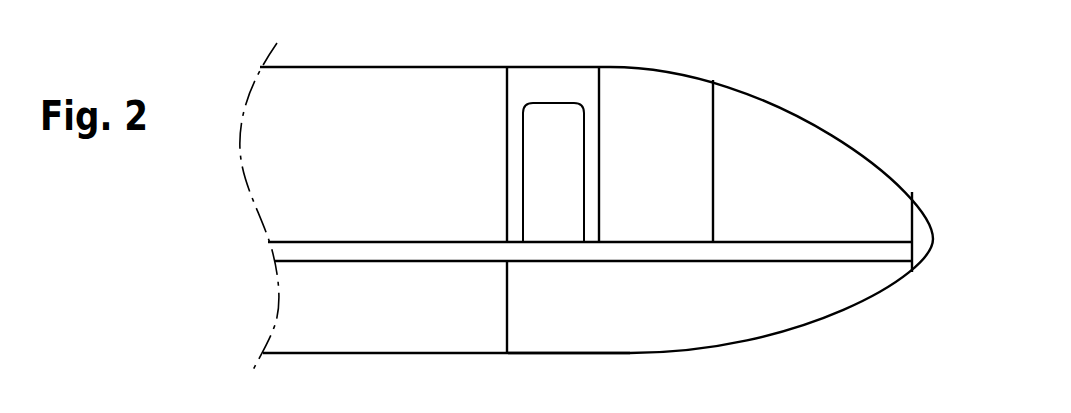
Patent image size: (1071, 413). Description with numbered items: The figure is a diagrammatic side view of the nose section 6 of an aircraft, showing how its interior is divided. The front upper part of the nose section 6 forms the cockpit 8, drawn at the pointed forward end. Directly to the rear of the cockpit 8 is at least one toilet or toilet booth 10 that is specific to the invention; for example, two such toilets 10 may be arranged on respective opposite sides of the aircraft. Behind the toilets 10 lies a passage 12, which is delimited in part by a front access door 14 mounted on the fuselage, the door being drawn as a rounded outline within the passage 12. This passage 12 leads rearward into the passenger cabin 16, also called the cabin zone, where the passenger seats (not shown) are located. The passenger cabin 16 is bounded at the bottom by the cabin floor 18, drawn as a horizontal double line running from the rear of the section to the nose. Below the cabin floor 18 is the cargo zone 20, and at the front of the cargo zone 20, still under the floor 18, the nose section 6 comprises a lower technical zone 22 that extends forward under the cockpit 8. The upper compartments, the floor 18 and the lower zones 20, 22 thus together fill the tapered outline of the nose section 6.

The nose section 6 is at (882, 127).
The cockpit 8 is at (802, 200).
The toilet 10 is at (644, 169).
The passage 12 is at (537, 165).
The front access door 14 is at (542, 103).
The passenger cabin 16 is at (416, 168).
The cabin floor 18 is at (300, 252).
The cargo zone 20 is at (388, 318).
The lower technical zone 22 is at (618, 319).